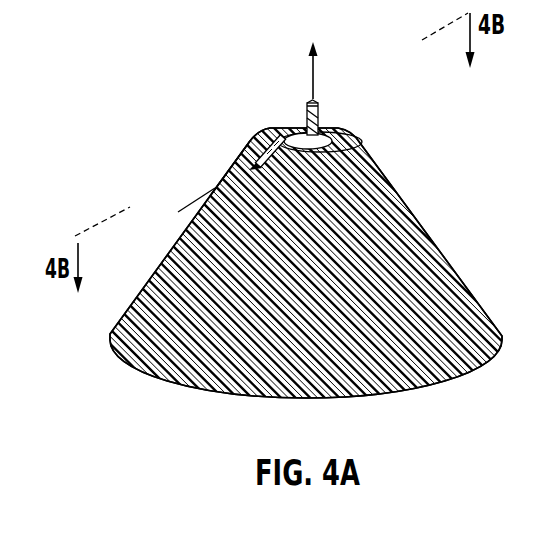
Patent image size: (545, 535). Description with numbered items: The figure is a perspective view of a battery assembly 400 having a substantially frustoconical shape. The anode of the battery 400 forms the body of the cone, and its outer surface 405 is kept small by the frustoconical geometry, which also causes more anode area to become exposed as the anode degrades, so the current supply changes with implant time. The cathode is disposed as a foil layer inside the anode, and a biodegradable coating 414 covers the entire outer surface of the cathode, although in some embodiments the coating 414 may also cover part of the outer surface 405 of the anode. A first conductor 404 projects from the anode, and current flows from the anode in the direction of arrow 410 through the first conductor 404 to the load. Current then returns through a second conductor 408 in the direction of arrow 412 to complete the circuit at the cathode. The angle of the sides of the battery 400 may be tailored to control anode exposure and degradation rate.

The battery assembly 400 is at (152, 50).
The first conductor 404 is at (318, 117).
The outer surface of the anode 405 is at (297, 137).
The second conductor 408 is at (262, 148).
The arrow 410 is at (315, 65).
The arrow 412 is at (197, 196).
The biodegradable coating 414 is at (400, 253).